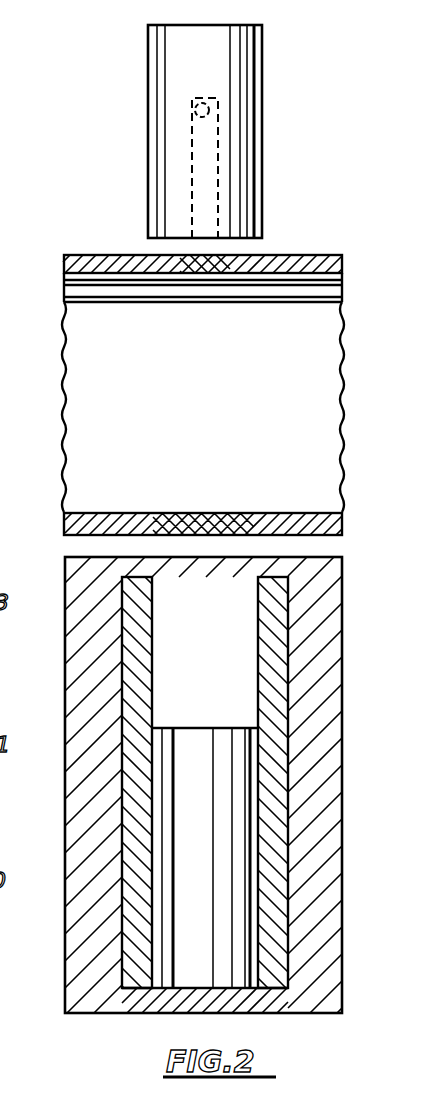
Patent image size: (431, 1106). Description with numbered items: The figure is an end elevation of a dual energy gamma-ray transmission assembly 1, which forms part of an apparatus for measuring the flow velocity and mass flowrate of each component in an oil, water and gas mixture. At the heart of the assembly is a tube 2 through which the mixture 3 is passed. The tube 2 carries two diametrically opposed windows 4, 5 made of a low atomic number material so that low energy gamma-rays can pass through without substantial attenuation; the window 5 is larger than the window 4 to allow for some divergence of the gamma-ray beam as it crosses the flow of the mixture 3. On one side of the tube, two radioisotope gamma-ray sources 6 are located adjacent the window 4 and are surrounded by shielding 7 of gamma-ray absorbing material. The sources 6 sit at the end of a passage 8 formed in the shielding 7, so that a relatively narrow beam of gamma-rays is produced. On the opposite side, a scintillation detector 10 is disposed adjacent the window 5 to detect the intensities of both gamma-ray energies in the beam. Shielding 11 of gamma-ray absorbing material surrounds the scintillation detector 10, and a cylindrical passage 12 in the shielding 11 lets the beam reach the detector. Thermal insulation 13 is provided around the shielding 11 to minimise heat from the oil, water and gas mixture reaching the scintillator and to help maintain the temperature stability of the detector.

The dual energy gamma-ray transmission assembly 1 is at (266, 139).
The tube 2 is at (327, 262).
The mixture 3 is at (233, 372).
The window 4 is at (223, 257).
The window 5 is at (230, 513).
The radioisotope gamma-ray sources 6 is at (230, 99).
The shielding 7 is at (173, 120).
The passage 8 is at (212, 183).
The scintillation detector 10 is at (233, 873).
The shielding 11 is at (137, 785).
The cylindrical passage 12 is at (225, 663).
The thermal insulation 13 is at (88, 622).